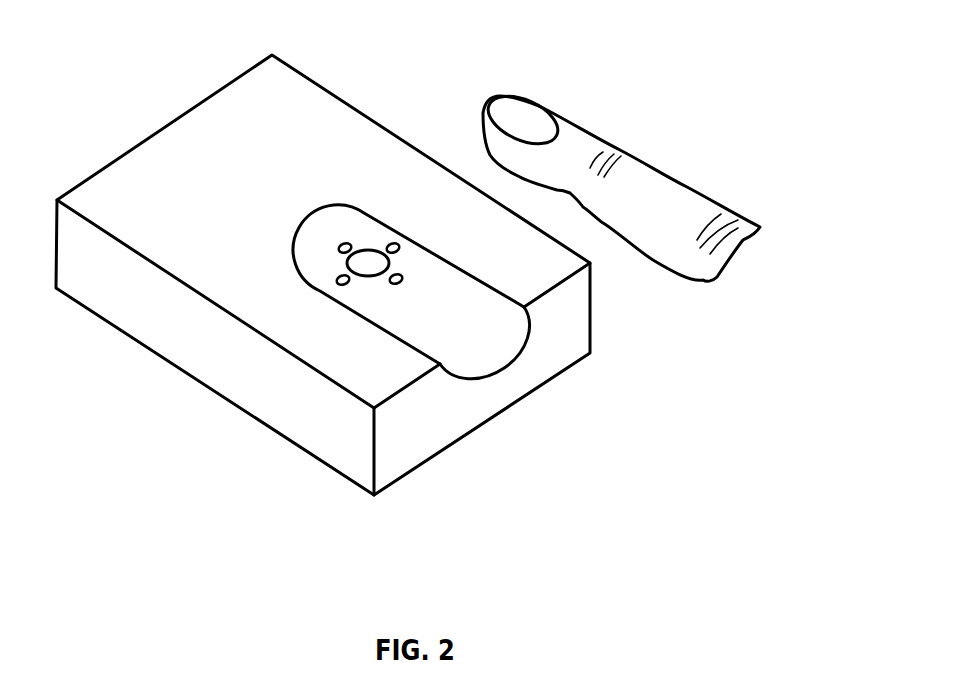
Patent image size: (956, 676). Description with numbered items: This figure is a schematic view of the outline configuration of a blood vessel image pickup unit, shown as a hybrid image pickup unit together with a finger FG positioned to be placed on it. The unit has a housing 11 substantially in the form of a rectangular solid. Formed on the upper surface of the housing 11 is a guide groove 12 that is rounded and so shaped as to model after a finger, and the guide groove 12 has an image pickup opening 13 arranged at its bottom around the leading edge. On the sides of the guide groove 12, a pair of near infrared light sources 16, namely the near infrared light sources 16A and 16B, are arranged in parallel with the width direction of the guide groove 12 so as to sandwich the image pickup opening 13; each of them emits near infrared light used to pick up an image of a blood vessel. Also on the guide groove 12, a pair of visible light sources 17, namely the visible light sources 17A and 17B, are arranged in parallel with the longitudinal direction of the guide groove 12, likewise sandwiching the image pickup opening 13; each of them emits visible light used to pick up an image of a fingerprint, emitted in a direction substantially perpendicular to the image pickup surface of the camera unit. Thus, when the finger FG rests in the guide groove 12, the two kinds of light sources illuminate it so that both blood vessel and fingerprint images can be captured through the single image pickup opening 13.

The housing 11 is at (582, 334).
The guide groove 12 is at (522, 342).
The image pickup opening 13 is at (391, 264).
The near infrared light sources 16 is at (574, 145).
The near infrared light source 16A is at (341, 276).
The near infrared light source 16B is at (389, 244).
The visible light sources 17 is at (567, 412).
The visible light source 17A is at (348, 253).
The visible light source 17B is at (397, 284).
The finger FG is at (688, 181).